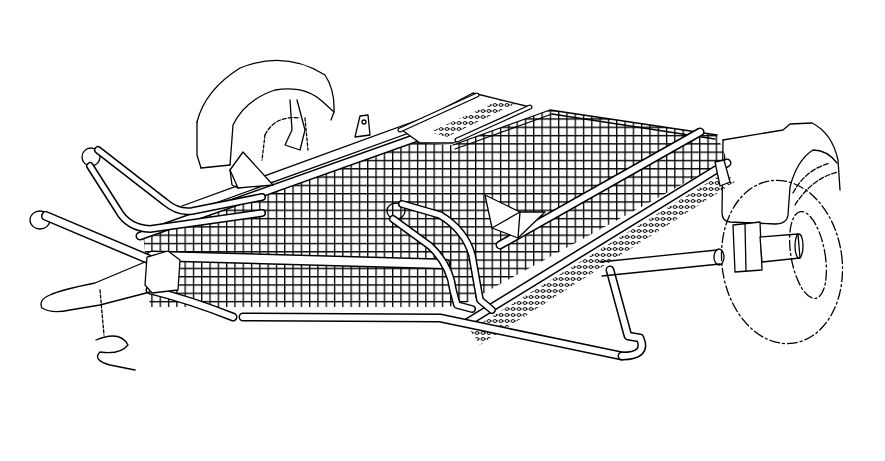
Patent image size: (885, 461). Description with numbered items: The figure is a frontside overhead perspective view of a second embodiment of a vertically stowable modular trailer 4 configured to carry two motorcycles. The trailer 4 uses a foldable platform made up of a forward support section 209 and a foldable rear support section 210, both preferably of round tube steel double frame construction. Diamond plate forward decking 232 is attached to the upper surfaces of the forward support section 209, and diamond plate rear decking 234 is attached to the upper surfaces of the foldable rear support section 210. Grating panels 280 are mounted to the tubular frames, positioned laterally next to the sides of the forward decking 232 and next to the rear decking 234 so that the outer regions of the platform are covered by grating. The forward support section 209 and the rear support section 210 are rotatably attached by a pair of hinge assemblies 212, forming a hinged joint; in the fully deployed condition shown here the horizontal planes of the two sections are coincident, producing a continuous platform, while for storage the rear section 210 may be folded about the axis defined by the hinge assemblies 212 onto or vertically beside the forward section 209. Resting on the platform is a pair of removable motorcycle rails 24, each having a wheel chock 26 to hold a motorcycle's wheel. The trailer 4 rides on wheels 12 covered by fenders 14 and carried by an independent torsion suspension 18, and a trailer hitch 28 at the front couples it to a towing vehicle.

The modular trailer 4 is at (73, 68).
The wheel 12 is at (803, 330).
The fender 14 is at (255, 80).
The independent torsion suspension 18 is at (692, 275).
The removable motorcycle rail 24 is at (150, 170).
The wheel chock 26 is at (195, 162).
The trailer hitch 28 is at (62, 317).
The forward support section 209 is at (440, 254).
The forward decking 232 is at (343, 242).
The foldable rear support section 210 is at (585, 97).
The rear decking 234 is at (548, 125).
The hinge assembly 212 is at (362, 125).
The grating panel 280 is at (90, 232).